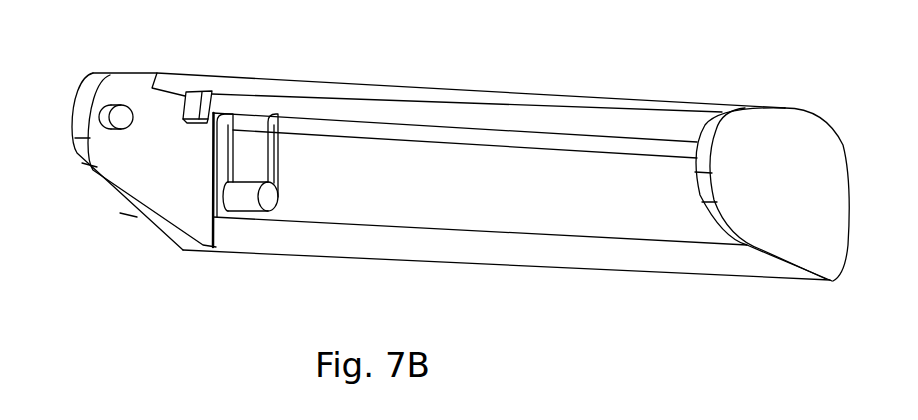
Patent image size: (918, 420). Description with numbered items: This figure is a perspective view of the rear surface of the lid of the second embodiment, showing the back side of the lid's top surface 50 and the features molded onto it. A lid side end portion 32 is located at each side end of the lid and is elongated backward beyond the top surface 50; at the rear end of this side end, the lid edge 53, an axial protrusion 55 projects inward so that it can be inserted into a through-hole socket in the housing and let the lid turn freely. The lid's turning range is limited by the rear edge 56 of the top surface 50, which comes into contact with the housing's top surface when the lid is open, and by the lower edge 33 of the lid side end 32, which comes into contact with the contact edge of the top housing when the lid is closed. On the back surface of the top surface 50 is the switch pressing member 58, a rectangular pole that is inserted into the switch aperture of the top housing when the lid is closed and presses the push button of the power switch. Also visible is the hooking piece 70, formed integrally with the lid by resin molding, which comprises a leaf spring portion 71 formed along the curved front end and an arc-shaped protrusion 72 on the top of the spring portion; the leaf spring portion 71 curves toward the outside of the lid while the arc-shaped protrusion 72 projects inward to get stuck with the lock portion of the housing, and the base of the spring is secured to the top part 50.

The top surface 50 is at (468, 89).
The rear edge 56 is at (317, 87).
The lid edge 53 is at (83, 100).
The axial protrusion 55 is at (125, 112).
The switch pressing member 58 is at (197, 92).
The lid side end portion 32 is at (787, 120).
The lower edge 33 is at (143, 222).
The hooking piece 70 is at (279, 212).
The leaf spring portion 71 is at (267, 162).
The arc-shaped protrusion 72 is at (248, 203).